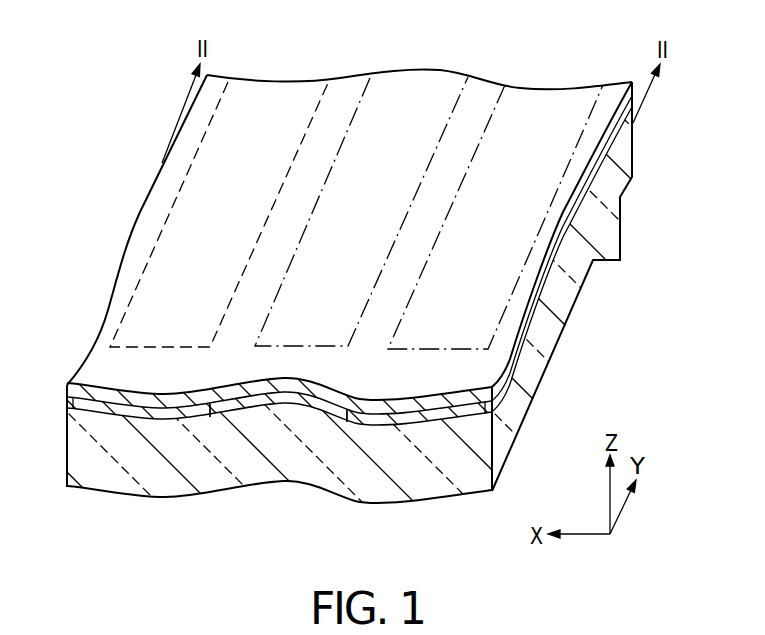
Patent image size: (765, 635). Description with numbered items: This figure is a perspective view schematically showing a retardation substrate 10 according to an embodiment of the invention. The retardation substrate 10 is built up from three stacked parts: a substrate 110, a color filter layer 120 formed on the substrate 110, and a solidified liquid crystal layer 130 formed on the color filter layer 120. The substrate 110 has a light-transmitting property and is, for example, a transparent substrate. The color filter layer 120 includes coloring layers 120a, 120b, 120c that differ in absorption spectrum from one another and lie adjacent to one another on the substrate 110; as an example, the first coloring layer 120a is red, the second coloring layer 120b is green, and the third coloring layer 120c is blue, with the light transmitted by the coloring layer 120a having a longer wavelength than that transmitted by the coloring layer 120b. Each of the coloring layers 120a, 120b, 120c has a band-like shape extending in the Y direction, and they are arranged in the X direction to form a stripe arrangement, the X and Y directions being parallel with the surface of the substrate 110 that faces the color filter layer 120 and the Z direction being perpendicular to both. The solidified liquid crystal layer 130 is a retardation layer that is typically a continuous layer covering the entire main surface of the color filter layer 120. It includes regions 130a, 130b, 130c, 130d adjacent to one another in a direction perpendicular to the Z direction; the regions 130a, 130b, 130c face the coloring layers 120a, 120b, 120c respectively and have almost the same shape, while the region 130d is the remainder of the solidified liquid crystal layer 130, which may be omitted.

The retardation substrate 10 is at (388, 68).
The substrate 110 is at (558, 300).
The color filter layer 120 is at (90, 408).
The first coloring layer 120a is at (137, 412).
The second coloring layer 120b is at (280, 412).
The third coloring layer 120c is at (392, 412).
The solidified liquid crystal layer 130 is at (457, 412).
The region 130a is at (168, 211).
The region 130b is at (306, 226).
The region 130c is at (446, 217).
The region 130d is at (390, 382).